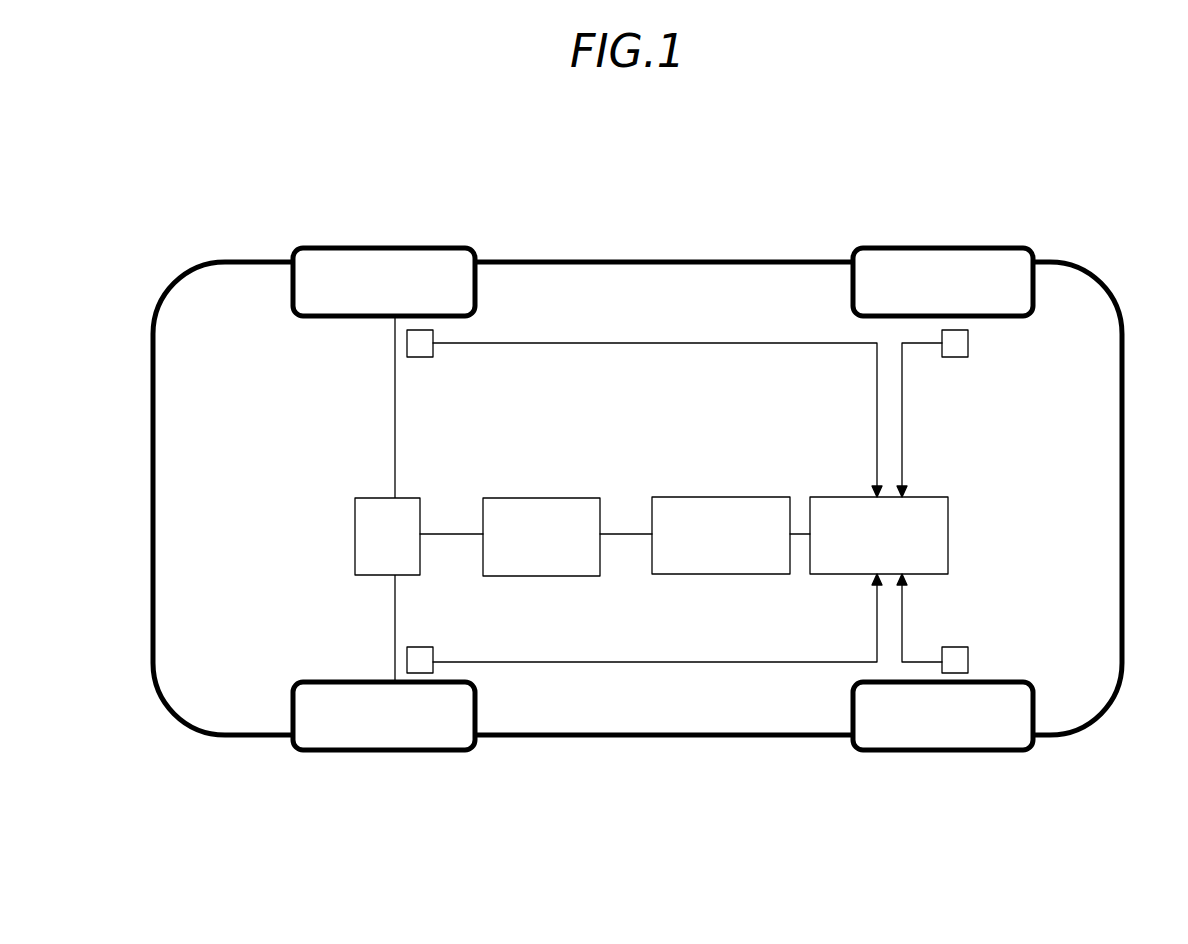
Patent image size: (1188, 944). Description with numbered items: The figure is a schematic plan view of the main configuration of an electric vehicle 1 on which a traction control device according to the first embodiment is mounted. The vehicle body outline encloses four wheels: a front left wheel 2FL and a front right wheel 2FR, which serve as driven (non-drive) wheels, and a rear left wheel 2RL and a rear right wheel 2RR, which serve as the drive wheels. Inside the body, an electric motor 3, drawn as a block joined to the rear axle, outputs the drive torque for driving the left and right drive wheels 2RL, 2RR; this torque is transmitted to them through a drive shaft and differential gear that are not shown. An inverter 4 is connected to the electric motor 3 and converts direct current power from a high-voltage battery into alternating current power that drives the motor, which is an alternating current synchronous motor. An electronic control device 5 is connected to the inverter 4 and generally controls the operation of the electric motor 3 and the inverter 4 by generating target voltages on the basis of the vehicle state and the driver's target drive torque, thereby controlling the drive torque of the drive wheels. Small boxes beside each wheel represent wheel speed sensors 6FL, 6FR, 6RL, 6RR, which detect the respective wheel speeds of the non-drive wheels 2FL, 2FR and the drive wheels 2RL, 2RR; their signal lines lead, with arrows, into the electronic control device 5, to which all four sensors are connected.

The electric vehicle 1 is at (222, 262).
The front right wheel 2FR is at (373, 248).
The front left wheel 2FL is at (402, 750).
The rear right wheel 2RR is at (912, 248).
The rear left wheel 2RL is at (970, 750).
The electric motor 3 is at (540, 577).
The inverter 4 is at (713, 574).
The electronic control device 5 is at (948, 533).
The wheel speed sensor 6FR is at (423, 330).
The wheel speed sensor 6FL is at (410, 673).
The wheel speed sensor 6RR is at (960, 330).
The wheel speed sensor 6RL is at (955, 673).